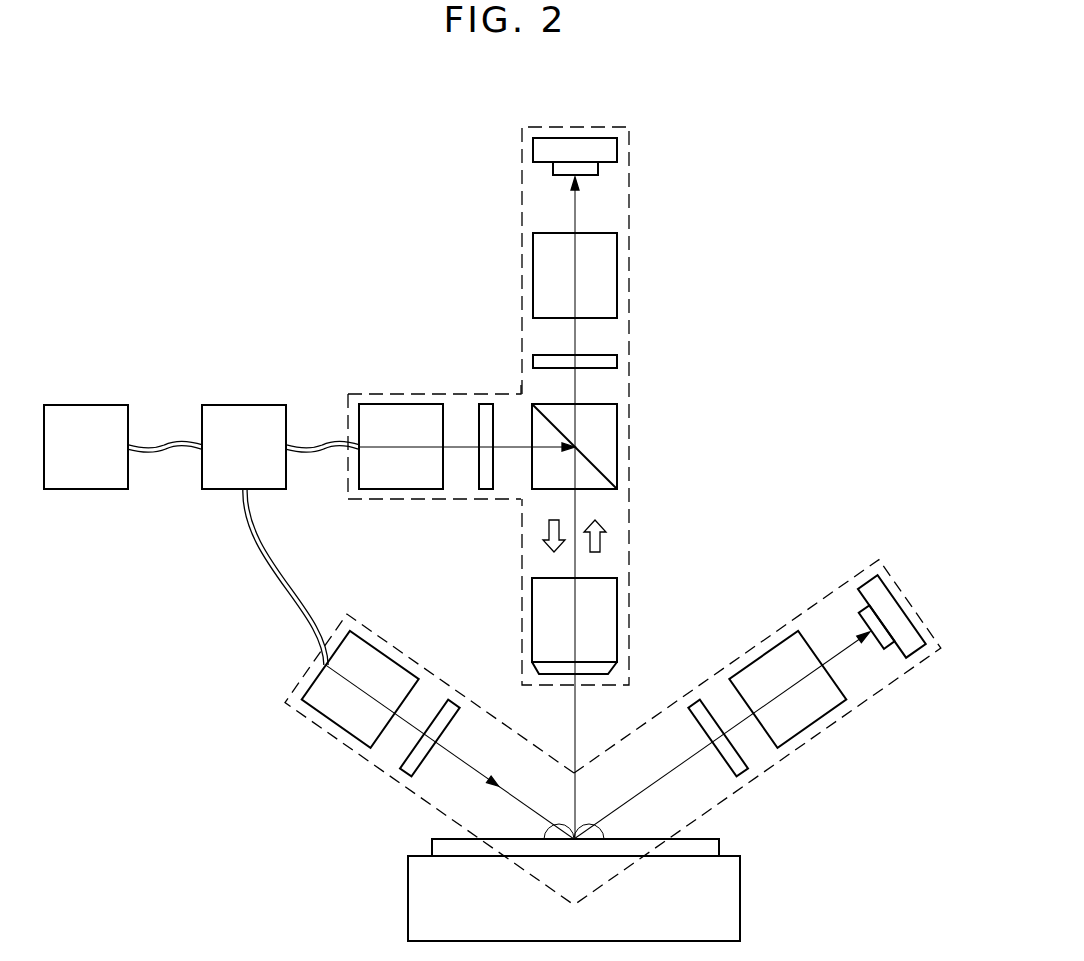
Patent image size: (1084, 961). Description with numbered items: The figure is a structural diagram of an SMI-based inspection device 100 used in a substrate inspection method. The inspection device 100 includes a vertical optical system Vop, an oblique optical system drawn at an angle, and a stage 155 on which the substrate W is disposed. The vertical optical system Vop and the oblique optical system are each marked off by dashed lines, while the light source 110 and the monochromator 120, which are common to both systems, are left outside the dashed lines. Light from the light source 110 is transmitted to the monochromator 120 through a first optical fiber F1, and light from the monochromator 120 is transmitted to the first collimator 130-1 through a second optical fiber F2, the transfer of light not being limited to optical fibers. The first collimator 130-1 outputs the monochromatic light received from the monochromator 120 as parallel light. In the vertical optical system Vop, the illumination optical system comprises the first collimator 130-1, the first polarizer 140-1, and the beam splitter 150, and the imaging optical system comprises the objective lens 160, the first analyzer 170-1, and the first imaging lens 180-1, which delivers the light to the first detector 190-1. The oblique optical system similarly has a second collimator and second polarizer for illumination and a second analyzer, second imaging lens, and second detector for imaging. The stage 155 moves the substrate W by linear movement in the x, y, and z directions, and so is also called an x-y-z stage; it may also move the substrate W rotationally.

The inspection device 100 is at (833, 112).
The light source 110 is at (88, 405).
The monochromator 120 is at (244, 405).
The first collimator 130-1 is at (403, 404).
The first polarizer 140-1 is at (487, 404).
The beam splitter 150 is at (617, 447).
The objective lens 160 is at (617, 620).
The first analyzer 170-1 is at (617, 362).
The first imaging lens 180-1 is at (617, 275).
The first detector 190-1 is at (617, 150).
The stage 155 is at (408, 898).
The substrate W is at (432, 847).
The first optical fiber F1 is at (167, 445).
The second optical fiber F2 is at (325, 445).
The vertical optical system Vop is at (629, 207).